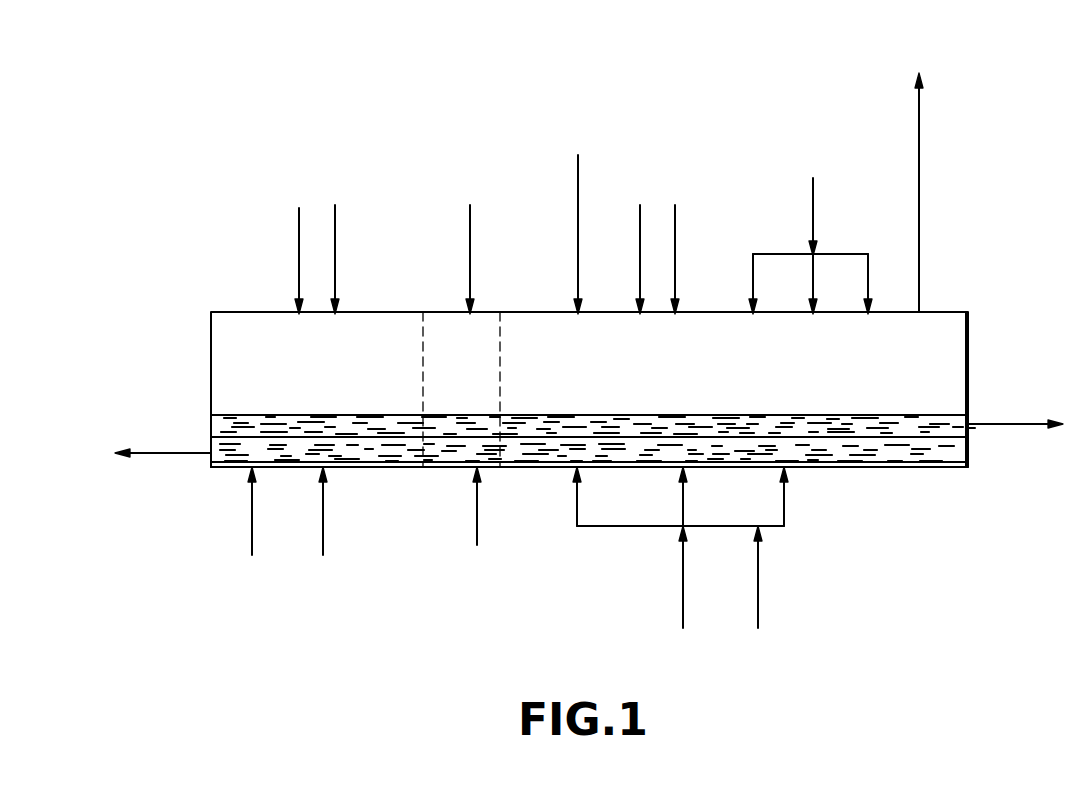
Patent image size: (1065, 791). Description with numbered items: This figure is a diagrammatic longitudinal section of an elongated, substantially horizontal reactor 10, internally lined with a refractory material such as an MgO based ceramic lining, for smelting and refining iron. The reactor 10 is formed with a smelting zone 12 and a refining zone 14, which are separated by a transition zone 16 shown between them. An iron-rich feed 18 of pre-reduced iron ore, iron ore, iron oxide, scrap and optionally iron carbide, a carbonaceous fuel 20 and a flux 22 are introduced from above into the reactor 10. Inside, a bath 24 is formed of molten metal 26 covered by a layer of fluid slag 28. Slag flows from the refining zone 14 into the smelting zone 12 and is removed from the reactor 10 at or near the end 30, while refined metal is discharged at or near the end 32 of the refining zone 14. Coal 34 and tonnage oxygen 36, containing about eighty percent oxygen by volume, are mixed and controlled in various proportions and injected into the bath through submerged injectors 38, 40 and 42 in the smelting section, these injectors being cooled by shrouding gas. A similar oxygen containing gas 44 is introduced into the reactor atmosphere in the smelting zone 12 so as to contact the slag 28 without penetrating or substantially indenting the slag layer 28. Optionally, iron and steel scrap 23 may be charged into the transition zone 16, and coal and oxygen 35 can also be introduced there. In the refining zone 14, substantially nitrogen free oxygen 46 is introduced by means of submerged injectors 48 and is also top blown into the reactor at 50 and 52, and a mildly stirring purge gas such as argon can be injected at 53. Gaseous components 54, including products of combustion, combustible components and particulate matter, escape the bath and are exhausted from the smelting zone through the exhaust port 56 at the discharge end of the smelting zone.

The reactor 10 is at (982, 328).
The smelting zone 12 is at (684, 373).
The refining zone 14 is at (342, 378).
The transition zone 16 is at (486, 375).
The iron-rich feed 18 is at (578, 248).
The carbonaceous fuel 20 is at (675, 246).
The flux 22 is at (640, 248).
The iron and steel scrap 23 is at (471, 222).
The bath 24 is at (802, 415).
The molten metal 26 is at (208, 462).
The slag layer 28 is at (975, 428).
The end of reactor 30 is at (1003, 424).
The end of refining zone 32 is at (166, 452).
The coal 34 is at (760, 576).
The coal and oxygen 35 is at (476, 520).
The tonnage oxygen 36 is at (682, 573).
The submerged injector 38 is at (577, 492).
The submerged injector 40 is at (685, 497).
The submerged injector 42 is at (786, 500).
The oxygen containing gas 44 is at (812, 212).
The nitrogen free oxygen 46 is at (325, 523).
The submerged injectors 48 is at (296, 470).
The top blowing location 50 is at (299, 228).
The top blowing location 52 is at (336, 228).
The purge gas injection 53 is at (250, 520).
The gaseous components 54 is at (919, 152).
The exhaust port 56 is at (935, 312).